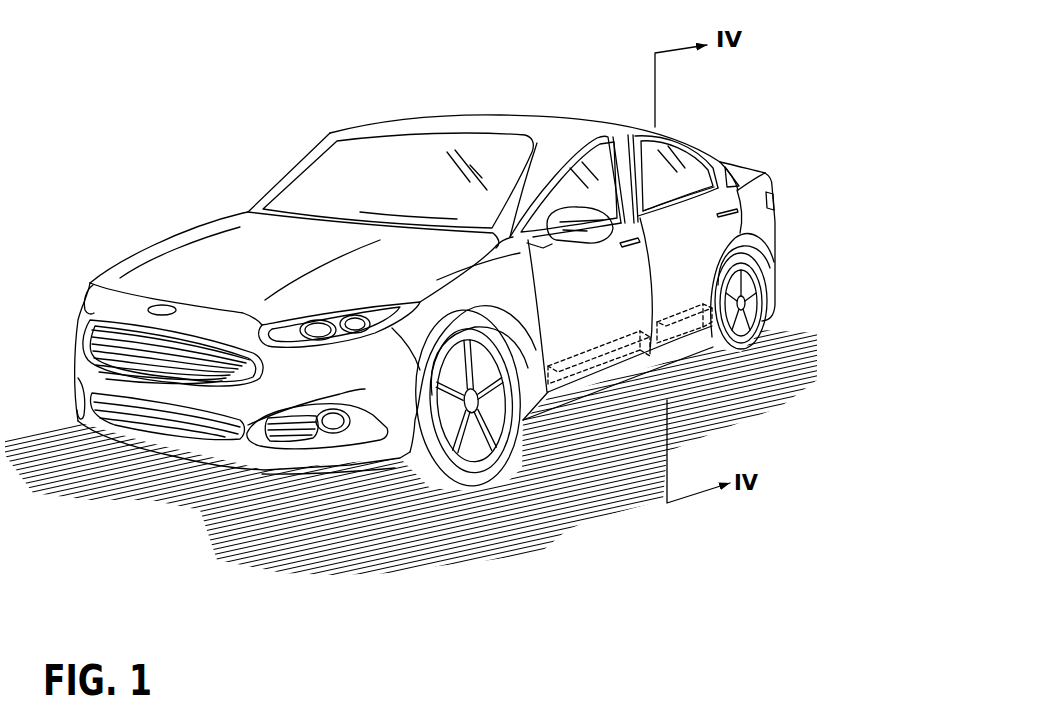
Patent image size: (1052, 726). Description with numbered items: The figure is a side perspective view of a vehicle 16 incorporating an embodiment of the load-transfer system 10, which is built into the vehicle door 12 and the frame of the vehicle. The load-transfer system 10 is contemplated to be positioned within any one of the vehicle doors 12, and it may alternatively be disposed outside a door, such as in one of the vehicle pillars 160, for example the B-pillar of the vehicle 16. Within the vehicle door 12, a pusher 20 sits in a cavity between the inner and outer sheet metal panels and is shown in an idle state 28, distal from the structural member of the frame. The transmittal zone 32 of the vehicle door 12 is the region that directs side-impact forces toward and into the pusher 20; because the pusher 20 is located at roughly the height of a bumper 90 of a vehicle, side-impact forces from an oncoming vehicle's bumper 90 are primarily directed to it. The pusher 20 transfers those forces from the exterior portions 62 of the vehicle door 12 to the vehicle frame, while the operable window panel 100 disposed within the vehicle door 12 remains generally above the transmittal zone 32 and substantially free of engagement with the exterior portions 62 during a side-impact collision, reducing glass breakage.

The load-transfer system 10 is at (743, 230).
The vehicle door 12 is at (679, 305).
The vehicle 16 is at (272, 180).
The pusher 20 is at (643, 380).
The idle state 28 is at (548, 398).
The transmittal zone 32 is at (580, 332).
The exterior portions 62 is at (627, 293).
The bumper 90 is at (158, 398).
The operable window panel 100 is at (662, 150).
The vehicle pillars 160 is at (687, 173).